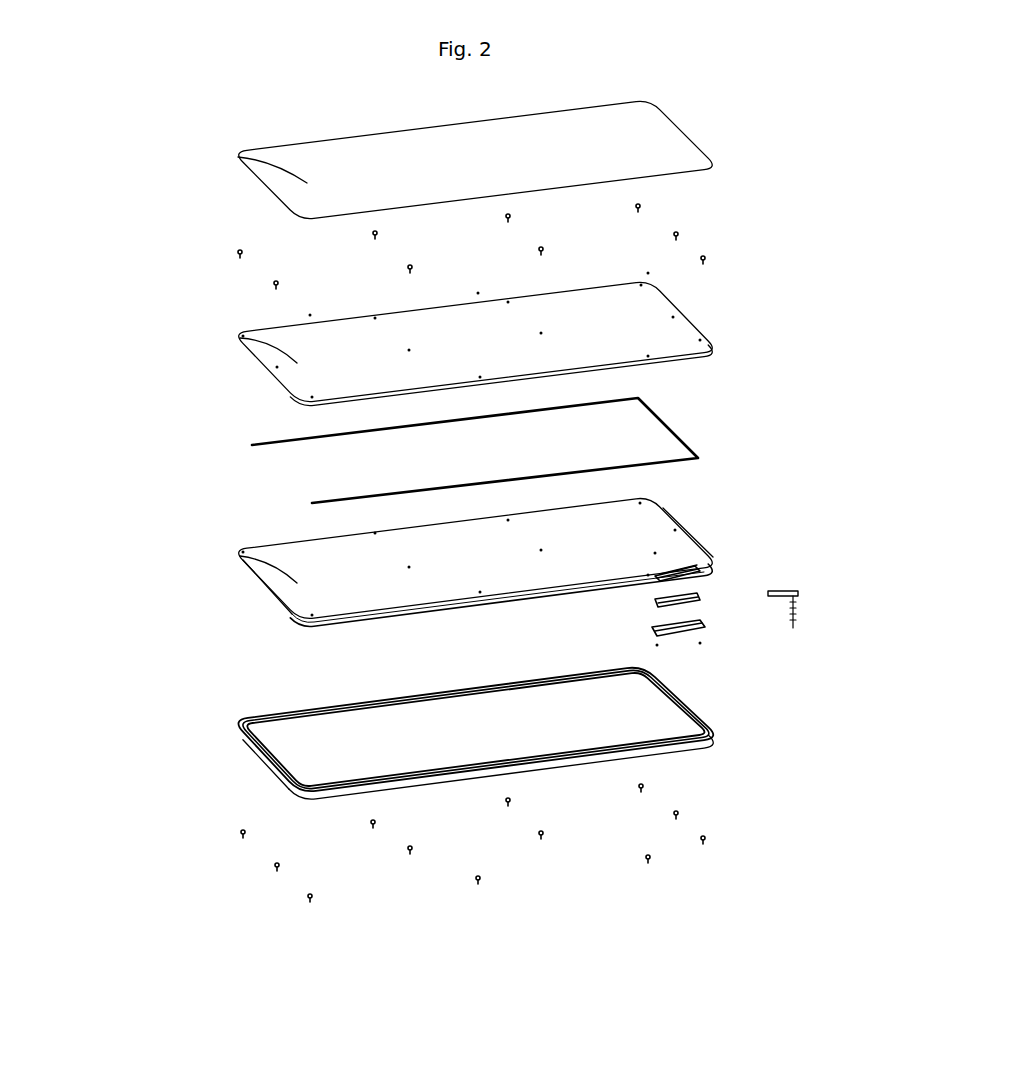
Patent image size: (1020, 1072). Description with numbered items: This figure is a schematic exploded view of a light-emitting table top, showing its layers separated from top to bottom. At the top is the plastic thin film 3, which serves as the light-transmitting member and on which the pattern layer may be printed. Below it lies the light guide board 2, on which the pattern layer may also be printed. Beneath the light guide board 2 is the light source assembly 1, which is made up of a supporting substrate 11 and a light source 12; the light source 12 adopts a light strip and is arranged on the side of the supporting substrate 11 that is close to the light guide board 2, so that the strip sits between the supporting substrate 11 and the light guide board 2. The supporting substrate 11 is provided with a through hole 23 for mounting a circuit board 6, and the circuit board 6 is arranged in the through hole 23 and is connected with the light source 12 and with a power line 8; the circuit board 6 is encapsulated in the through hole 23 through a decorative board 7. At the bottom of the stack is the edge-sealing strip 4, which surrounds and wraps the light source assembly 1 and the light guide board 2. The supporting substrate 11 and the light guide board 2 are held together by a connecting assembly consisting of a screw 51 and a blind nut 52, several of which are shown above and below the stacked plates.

The light source assembly 1 is at (380, 512).
The supporting substrate 11 is at (298, 602).
The light source 12 is at (256, 444).
The light guide board 2 is at (247, 350).
The through hole 23 is at (705, 568).
The plastic thin film 3 is at (233, 155).
The edge-sealing strip 4 is at (243, 750).
The screw 51 is at (278, 864).
The blind nut 52 is at (275, 283).
The circuit board 6 is at (700, 598).
The decorative board 7 is at (708, 628).
The power line 8 is at (800, 592).